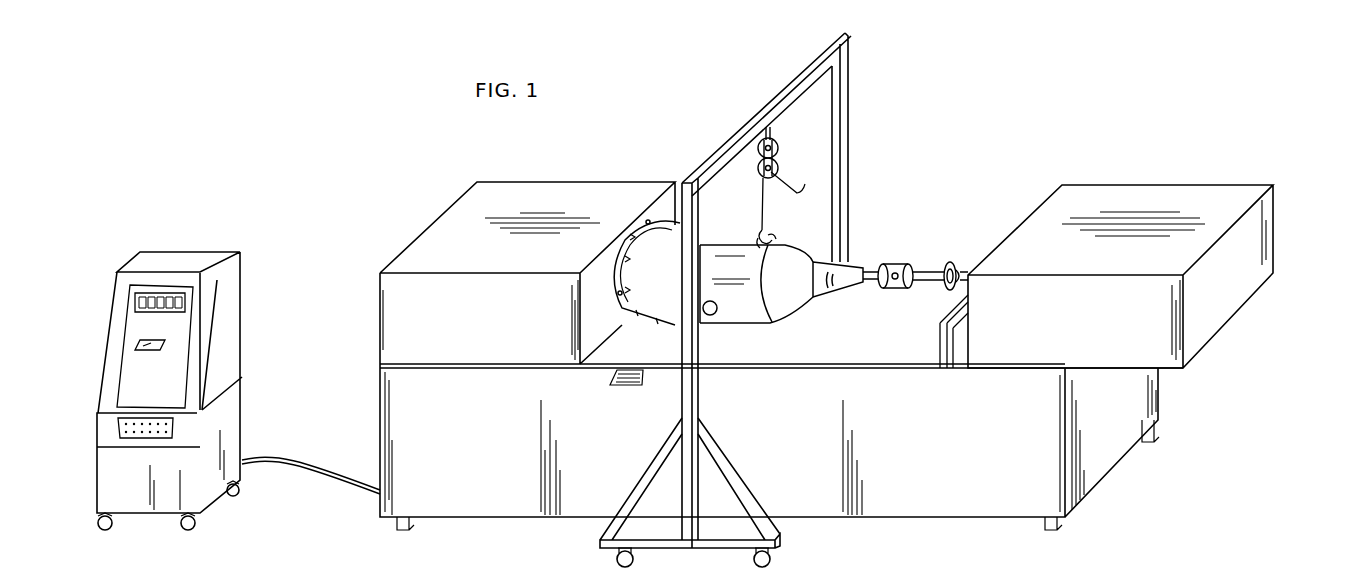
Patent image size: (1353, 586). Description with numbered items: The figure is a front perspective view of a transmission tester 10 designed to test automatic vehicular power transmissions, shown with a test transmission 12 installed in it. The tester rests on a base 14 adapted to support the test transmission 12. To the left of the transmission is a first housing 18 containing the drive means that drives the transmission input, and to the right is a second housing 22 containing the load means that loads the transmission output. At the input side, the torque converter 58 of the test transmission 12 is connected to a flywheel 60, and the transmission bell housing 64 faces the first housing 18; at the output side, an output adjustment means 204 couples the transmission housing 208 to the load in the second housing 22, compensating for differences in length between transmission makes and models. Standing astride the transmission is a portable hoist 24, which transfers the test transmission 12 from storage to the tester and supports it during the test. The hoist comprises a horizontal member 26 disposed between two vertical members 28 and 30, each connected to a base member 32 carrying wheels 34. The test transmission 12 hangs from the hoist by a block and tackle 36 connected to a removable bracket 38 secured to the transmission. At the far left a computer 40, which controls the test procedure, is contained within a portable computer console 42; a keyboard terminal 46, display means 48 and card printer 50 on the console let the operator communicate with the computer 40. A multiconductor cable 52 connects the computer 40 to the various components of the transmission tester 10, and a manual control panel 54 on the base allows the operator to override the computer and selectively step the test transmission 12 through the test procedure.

The transmission tester 10 is at (1043, 135).
The test transmission 12 is at (792, 285).
The base 14 is at (781, 447).
The first housing 18 is at (527, 273).
The second housing 22 is at (1106, 276).
The portable hoist 24 is at (752, 308).
The horizontal member 26 is at (777, 97).
The vertical member 28 is at (845, 110).
The vertical member 30 is at (700, 407).
The base member 32 is at (722, 548).
The wheels 34 is at (773, 566).
The block and tackle 36 is at (791, 149).
The removable bracket 38 is at (772, 236).
The computer 40 is at (170, 365).
The portable computer console 42 is at (232, 350).
The keyboard terminal 46 is at (120, 428).
The display means 48 is at (137, 297).
The card printer 50 is at (140, 343).
The multiconductor cable 52 is at (306, 468).
The manual control panel 54 is at (612, 383).
The torque converter 58 is at (658, 320).
The flywheel 60 is at (636, 314).
The transmission bell housing 64 is at (662, 238).
The output adjustment means 204 is at (931, 252).
The transmission housing 208 is at (748, 292).